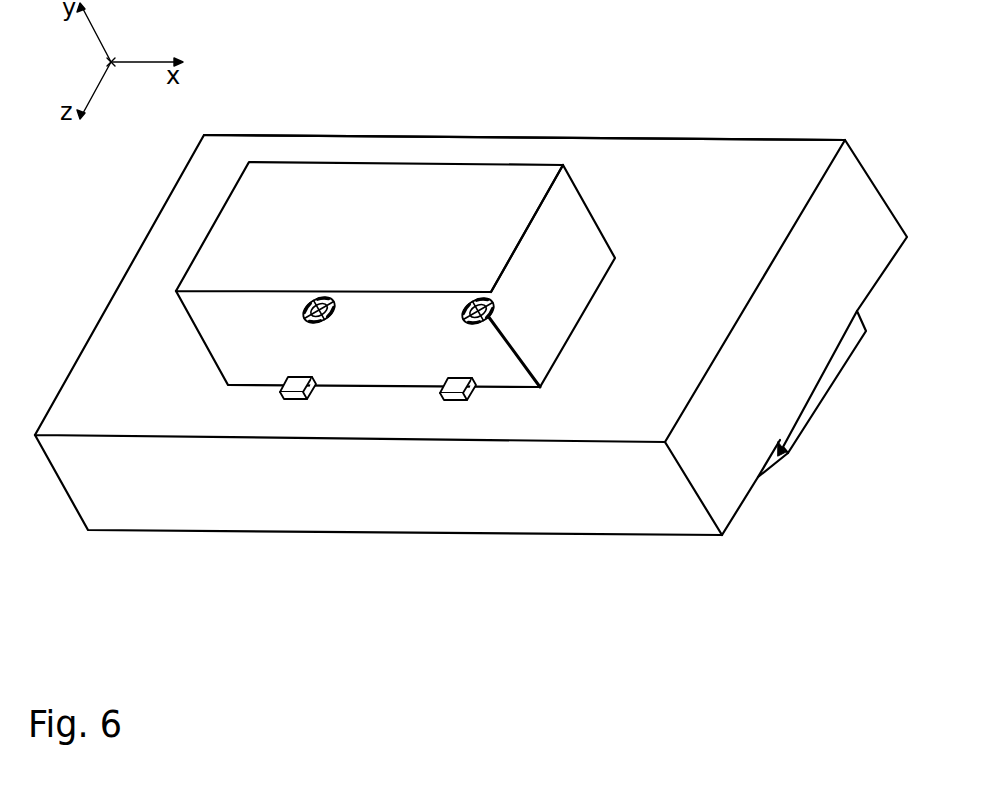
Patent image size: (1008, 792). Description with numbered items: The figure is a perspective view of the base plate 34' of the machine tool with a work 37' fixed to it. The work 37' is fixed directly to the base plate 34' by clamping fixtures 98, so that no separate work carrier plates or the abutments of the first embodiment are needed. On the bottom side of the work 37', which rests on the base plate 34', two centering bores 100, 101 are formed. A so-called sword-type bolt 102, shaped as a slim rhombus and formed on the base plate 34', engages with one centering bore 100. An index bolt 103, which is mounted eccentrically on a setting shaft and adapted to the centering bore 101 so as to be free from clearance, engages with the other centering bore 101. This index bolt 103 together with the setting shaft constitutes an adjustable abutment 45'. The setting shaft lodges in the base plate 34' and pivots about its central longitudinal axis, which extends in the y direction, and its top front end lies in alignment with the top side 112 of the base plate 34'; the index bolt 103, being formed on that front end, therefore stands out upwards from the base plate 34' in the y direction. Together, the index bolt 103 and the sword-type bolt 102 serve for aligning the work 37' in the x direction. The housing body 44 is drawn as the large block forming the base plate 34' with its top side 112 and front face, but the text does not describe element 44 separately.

The housing body 44 is at (703, 162).
The base plate 34' is at (378, 544).
The top side of the base plate 112 is at (405, 152).
The work 37' is at (395, 206).
The adjustable abutment 45' is at (527, 409).
The centering bore 101 is at (490, 322).
The centering bore 100 is at (302, 312).
The sword-type bolt 102 is at (313, 296).
The index bolt 103 is at (468, 297).
The clamping fixtures 98 is at (452, 400).